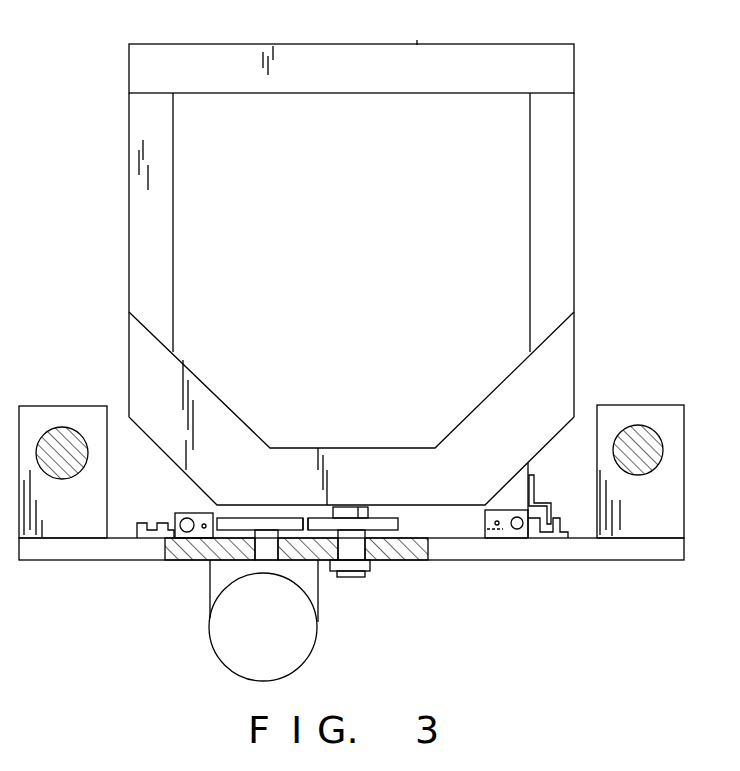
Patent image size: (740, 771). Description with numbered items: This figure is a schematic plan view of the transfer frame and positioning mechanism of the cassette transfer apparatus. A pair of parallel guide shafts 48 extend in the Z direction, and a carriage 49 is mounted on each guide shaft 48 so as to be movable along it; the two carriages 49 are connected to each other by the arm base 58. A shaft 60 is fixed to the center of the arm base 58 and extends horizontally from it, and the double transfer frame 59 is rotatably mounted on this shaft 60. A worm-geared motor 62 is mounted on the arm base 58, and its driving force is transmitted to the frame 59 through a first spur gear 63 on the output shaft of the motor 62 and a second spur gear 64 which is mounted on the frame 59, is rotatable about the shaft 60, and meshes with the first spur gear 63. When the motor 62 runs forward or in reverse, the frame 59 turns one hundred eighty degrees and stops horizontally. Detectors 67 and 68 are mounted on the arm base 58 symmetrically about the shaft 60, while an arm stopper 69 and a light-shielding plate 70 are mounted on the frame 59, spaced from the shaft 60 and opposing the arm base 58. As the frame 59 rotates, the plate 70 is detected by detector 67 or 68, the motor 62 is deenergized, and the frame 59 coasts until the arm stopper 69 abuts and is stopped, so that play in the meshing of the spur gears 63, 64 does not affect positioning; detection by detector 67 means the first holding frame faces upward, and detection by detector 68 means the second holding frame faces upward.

The guide shaft 48 is at (66, 428).
The carriage 49 is at (104, 458).
The arm base 58 is at (587, 550).
The double transfer frame 59 is at (499, 50).
The shaft 60 is at (363, 578).
The worm-geared motor 62 is at (300, 652).
The first spur gear 63 is at (238, 522).
The second spur gear 64 is at (386, 518).
The detector 67 is at (543, 538).
The detector 68 is at (139, 527).
The arm stopper 69 is at (500, 497).
The light-shielding plate 70 is at (546, 502).